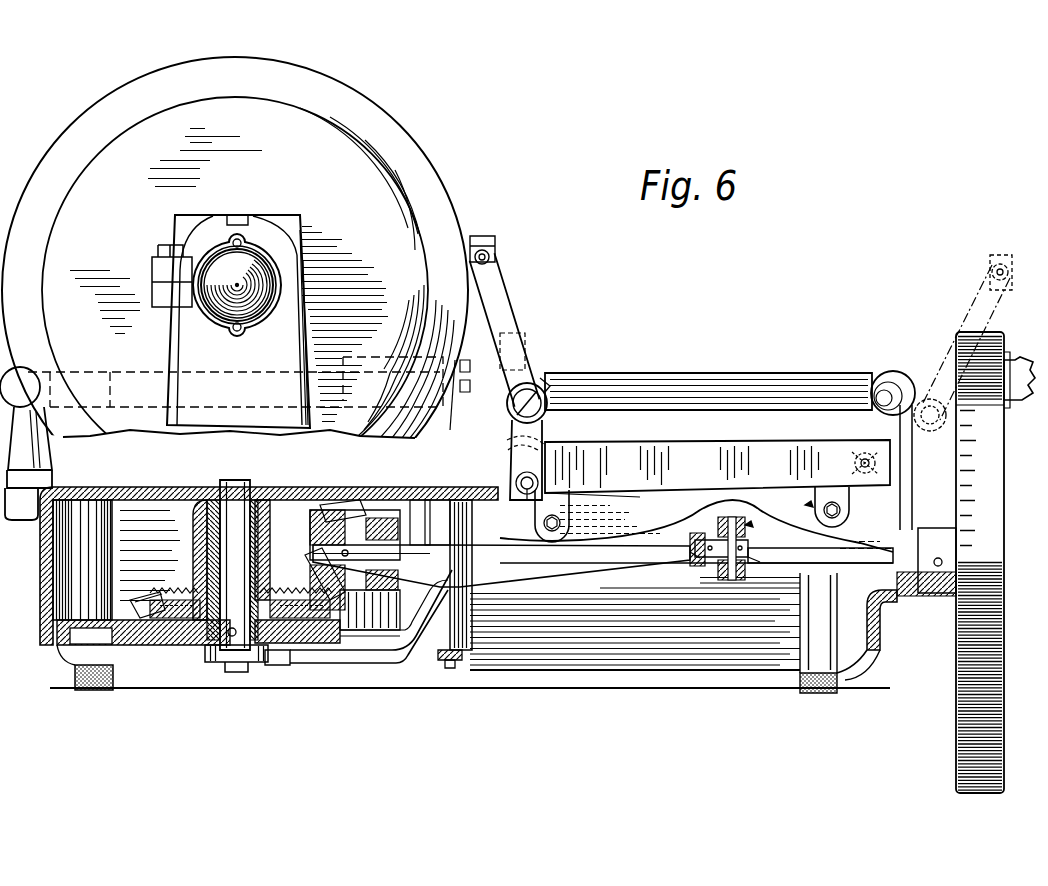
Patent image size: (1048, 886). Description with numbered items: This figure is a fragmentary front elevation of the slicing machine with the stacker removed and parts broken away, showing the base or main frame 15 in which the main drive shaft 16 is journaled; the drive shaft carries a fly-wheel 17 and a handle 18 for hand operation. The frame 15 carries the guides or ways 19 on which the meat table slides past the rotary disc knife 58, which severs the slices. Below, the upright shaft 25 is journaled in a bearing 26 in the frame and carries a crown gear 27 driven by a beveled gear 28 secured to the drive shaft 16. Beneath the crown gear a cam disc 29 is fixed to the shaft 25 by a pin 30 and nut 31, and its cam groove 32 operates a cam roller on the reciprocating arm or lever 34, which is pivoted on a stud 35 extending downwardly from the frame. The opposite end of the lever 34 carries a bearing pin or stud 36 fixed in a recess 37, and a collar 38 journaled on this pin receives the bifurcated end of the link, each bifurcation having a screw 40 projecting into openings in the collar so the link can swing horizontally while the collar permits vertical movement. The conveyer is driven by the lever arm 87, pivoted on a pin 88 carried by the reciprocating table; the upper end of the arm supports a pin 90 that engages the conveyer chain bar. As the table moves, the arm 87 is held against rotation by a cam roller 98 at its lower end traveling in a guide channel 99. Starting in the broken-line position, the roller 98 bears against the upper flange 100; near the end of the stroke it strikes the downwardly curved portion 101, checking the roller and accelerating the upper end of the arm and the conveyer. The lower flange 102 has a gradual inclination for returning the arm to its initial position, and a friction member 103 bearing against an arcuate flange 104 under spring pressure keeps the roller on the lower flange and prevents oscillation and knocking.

The base or main frame 15 is at (870, 632).
The main drive shaft 16 is at (790, 570).
The fly-wheel 17 is at (990, 507).
The handle 18 is at (1022, 366).
The guides or ways 19 is at (697, 378).
The upright shaft 25 is at (238, 494).
The bearing 26 is at (203, 534).
The crown gear 27 is at (163, 642).
The beveled gear 28 is at (340, 506).
The cam disc 29 is at (362, 642).
The pin 30 is at (234, 636).
The nut 31 is at (272, 664).
The cam groove 32 is at (85, 640).
The reciprocating arm or lever 34 is at (548, 568).
The stud 35 is at (449, 664).
The bearing pin or stud 36 is at (746, 549).
The recess 37 is at (696, 569).
The collar 38 is at (757, 576).
The screw 40 is at (736, 516).
The rotary disc knife 58 is at (388, 192).
The lever arm 87 is at (507, 302).
The pin 88 is at (929, 432).
The pin 90 is at (490, 257).
The cam roller 98 is at (519, 483).
The guide channel 99 is at (700, 453).
The upper flange 100 is at (636, 450).
The downwardly curved portion 101 is at (512, 461).
The lower flange 102 is at (640, 498).
The friction member 103 is at (535, 363).
The arcuate flange 104 is at (546, 386).